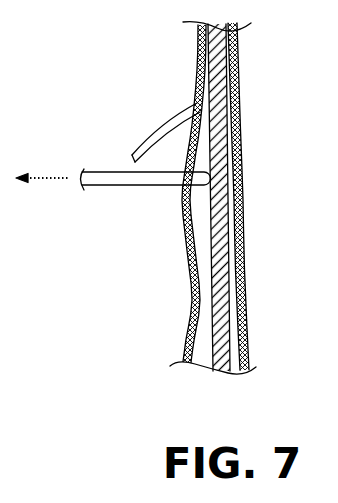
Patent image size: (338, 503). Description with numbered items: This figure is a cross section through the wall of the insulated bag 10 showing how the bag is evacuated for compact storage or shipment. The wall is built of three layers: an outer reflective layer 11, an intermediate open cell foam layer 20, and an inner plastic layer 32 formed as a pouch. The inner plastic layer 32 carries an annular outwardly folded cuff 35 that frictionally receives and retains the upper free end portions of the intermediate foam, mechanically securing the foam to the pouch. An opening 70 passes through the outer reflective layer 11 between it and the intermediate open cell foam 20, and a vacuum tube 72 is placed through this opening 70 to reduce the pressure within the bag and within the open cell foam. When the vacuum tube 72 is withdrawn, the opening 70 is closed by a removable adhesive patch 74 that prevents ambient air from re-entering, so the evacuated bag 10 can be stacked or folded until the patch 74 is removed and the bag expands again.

The insulated bag 10 is at (174, 198).
The outer reflective layer 11 is at (190, 318).
The intermediate open cell foam layer 20 is at (217, 252).
The inner plastic layer 32 is at (245, 146).
The cuff 35 is at (204, 72).
The opening 70 is at (179, 187).
The vacuum tube 72 is at (98, 187).
The adhesive patch 74 is at (158, 141).